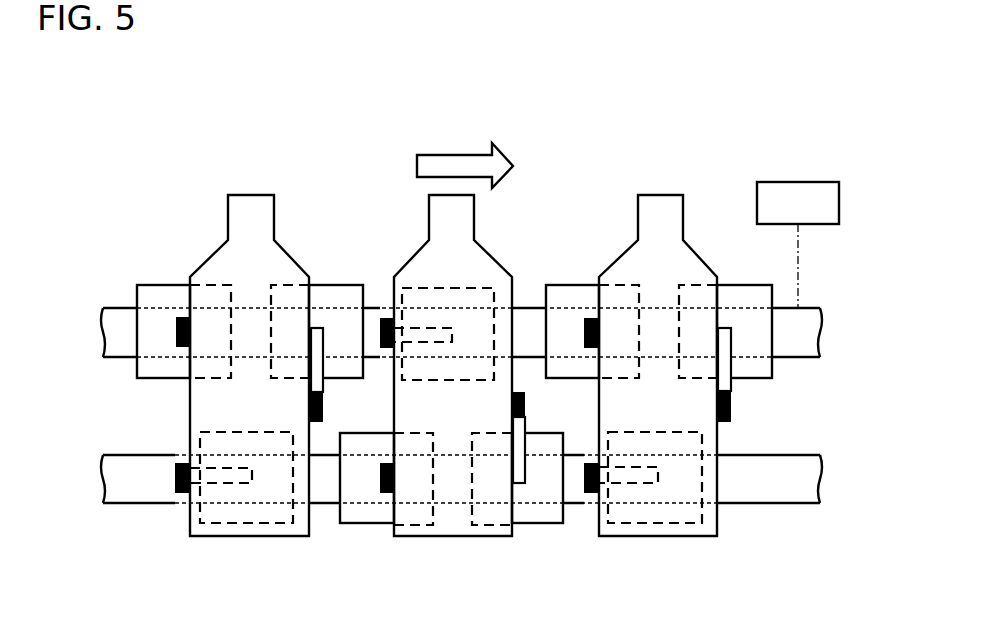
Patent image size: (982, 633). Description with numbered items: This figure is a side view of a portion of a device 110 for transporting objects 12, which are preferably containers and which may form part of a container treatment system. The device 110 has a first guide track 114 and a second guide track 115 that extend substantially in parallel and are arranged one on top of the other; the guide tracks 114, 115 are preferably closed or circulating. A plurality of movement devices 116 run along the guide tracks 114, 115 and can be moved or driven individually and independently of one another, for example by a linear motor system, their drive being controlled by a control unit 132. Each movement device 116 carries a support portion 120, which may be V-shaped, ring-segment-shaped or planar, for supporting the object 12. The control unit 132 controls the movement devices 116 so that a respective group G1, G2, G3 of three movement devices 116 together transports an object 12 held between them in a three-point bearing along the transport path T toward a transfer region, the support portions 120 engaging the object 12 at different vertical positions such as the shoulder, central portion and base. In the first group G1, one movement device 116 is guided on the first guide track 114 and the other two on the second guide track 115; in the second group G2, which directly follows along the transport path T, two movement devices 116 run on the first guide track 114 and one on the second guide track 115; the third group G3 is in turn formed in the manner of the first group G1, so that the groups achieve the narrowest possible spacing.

The device for transporting objects 110 is at (504, 55).
The object 12 is at (220, 263).
The first guide track 114 is at (790, 477).
The second guide track 115 is at (793, 333).
The movement device 116 is at (157, 295).
The support portion 120 is at (310, 407).
The control unit 132 is at (792, 193).
The transport path T is at (432, 163).
The first group G1 is at (595, 187).
The second group G2 is at (400, 550).
The third group G3 is at (143, 175).